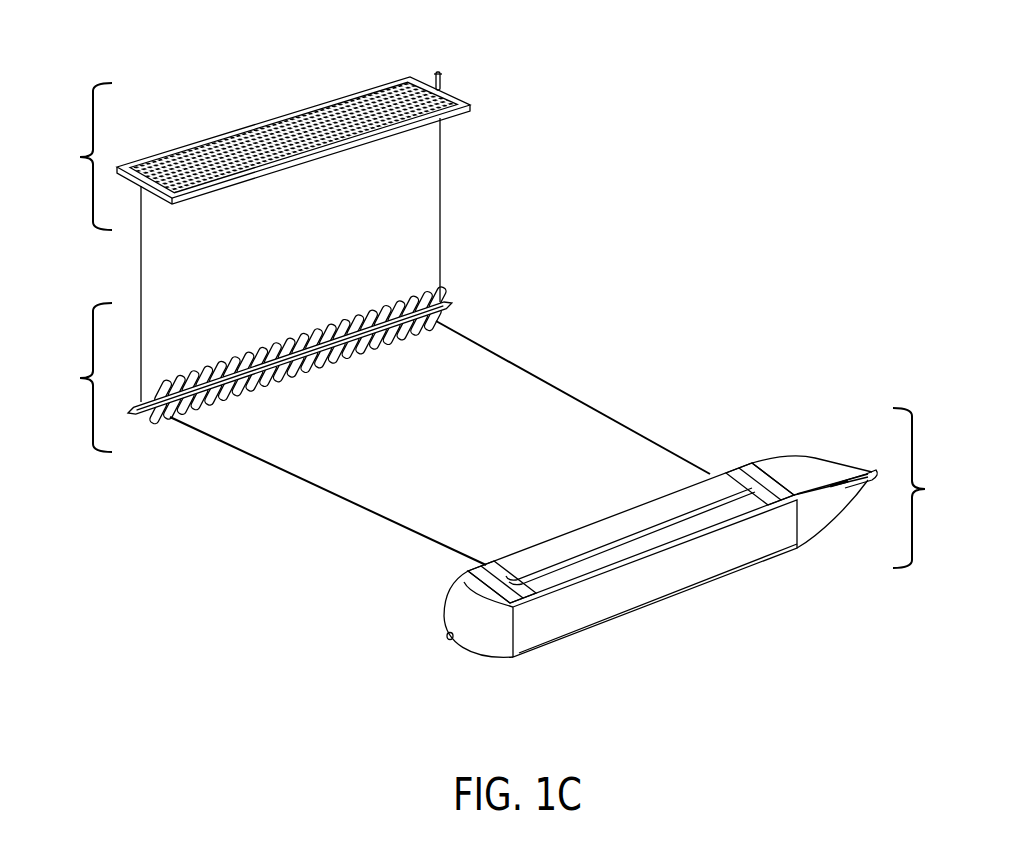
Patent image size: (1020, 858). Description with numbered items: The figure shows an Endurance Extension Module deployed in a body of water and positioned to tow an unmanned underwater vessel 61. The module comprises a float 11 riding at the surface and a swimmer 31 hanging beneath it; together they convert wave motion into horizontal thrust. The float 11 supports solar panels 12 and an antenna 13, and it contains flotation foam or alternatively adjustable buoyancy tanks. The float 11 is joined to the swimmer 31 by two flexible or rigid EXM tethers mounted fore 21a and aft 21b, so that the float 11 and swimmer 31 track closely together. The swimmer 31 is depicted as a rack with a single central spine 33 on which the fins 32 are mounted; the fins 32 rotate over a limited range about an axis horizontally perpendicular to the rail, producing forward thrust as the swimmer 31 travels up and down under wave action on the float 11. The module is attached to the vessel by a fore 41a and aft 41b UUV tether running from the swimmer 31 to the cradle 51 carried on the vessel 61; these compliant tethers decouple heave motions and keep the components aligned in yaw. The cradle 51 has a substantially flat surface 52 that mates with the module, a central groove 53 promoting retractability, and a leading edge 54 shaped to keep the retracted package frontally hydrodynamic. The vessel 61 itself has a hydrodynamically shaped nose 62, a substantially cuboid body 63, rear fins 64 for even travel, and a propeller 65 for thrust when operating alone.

The float 11 is at (80, 157).
The solar panels 12 is at (287, 113).
The antenna 13 is at (438, 70).
The fore EXM tether 21a is at (141, 283).
The aft EXM tether 21b is at (441, 207).
The swimmer 31 is at (80, 378).
The fins 32 is at (221, 358).
The central spine 33 is at (300, 348).
The fore UUV tether 41a is at (322, 487).
The aft UUV tether 41b is at (549, 381).
The cradle 51 is at (760, 461).
The flat surface 52 is at (565, 552).
The groove 53 is at (607, 528).
The leading edge 54 is at (500, 598).
The underwater vessel 61 is at (925, 489).
The nose 62 is at (503, 659).
The body 63 is at (585, 615).
The rear fins 64 is at (853, 513).
The propeller 65 is at (870, 468).